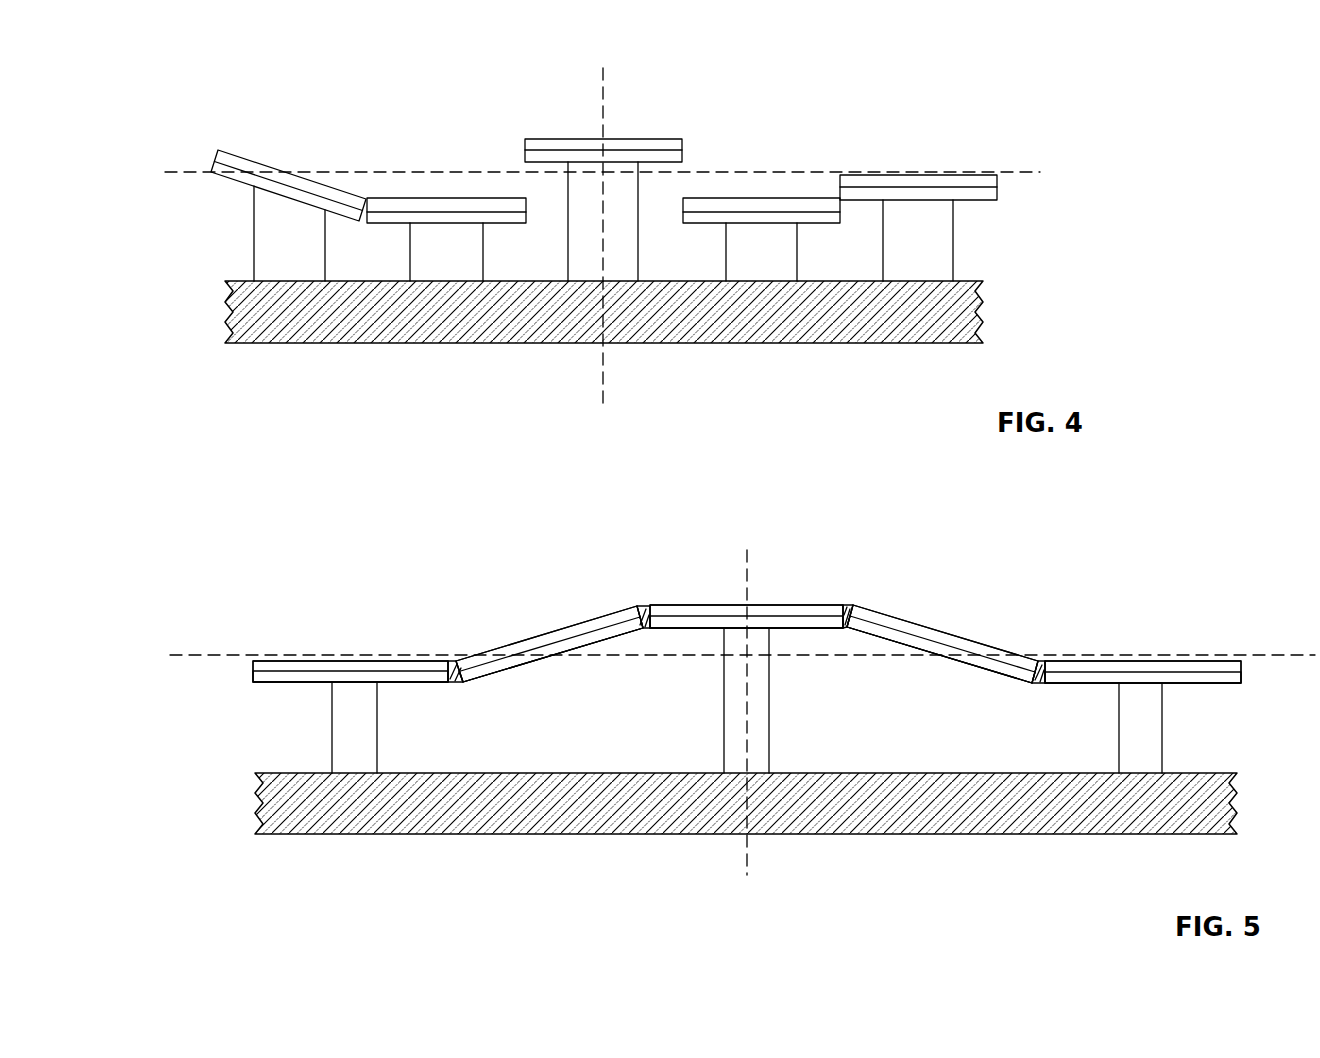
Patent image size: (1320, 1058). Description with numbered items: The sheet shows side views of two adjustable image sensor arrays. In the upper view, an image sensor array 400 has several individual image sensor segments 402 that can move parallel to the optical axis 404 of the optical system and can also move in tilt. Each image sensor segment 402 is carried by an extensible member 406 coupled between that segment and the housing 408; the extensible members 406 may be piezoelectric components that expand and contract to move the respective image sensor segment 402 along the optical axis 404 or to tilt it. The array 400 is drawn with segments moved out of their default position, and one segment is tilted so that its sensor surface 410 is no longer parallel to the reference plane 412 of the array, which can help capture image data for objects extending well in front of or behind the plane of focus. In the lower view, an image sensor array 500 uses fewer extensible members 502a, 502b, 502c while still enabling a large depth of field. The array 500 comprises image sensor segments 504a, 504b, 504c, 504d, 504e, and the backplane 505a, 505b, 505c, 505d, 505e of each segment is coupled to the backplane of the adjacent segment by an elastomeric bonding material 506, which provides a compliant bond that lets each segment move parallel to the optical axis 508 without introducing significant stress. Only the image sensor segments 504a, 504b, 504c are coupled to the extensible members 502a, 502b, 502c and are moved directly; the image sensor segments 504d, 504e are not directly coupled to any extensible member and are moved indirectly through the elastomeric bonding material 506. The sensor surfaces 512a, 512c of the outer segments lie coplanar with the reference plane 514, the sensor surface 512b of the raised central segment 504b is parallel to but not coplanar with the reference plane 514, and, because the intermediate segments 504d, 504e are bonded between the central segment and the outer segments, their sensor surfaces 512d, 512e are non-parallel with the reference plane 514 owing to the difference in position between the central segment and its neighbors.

In FIG. 4, the image sensor array 400 is at (1012, 50).
In FIG. 4, the image sensor segment 402 is at (648, 138).
In FIG. 4, the optical axis 404 is at (603, 113).
In FIG. 4, the extensible member 406 is at (268, 237).
In FIG. 4, the housing 408 is at (963, 307).
In FIG. 4, the sensor surface 410 is at (306, 168).
In FIG. 4, the reference plane 412 is at (1015, 170).
In FIG. 5, the image sensor array 500 is at (1182, 496).
In FIG. 5, the extensible member 502a is at (364, 762).
In FIG. 5, the extensible member 502b is at (757, 758).
In FIG. 5, the extensible member 502c is at (1135, 738).
In FIG. 5, the image sensor segment 504a is at (272, 685).
In FIG. 5, the image sensor segment 504b is at (787, 630).
In FIG. 5, the image sensor segment 504c is at (1245, 679).
In FIG. 5, the image sensor segment 504d is at (507, 670).
In FIG. 5, the image sensor segment 504e is at (918, 654).
In FIG. 5, the backplane 505a is at (308, 677).
In FIG. 5, the backplane 505b is at (843, 630).
In FIG. 5, the backplane 505c is at (1185, 685).
In FIG. 5, the backplane 505d is at (627, 628).
In FIG. 5, the backplane 505e is at (985, 665).
In FIG. 5, the elastomeric bonding material 506 is at (455, 663).
In FIG. 5, the optical axis 508 is at (758, 855).
In FIG. 5, the sensor surface 512a is at (343, 655).
In FIG. 5, the sensor surface 512b is at (785, 598).
In FIG. 5, the sensor surface 512c is at (1186, 655).
In FIG. 5, the sensor surface 512d is at (574, 613).
In FIG. 5, the sensor surface 512e is at (941, 623).
In FIG. 5, the reference plane 514 is at (197, 655).